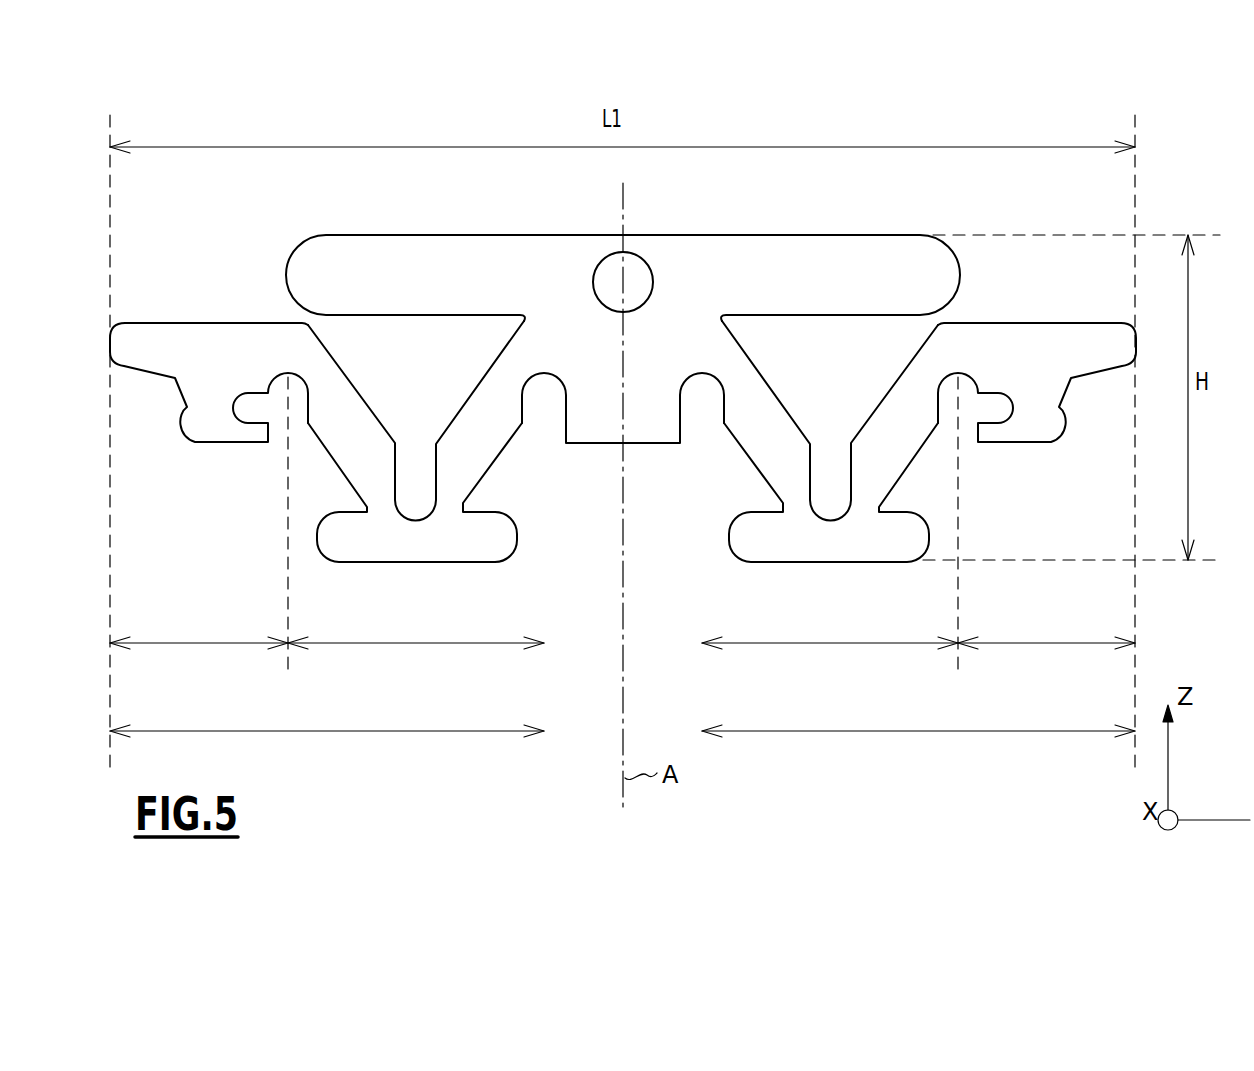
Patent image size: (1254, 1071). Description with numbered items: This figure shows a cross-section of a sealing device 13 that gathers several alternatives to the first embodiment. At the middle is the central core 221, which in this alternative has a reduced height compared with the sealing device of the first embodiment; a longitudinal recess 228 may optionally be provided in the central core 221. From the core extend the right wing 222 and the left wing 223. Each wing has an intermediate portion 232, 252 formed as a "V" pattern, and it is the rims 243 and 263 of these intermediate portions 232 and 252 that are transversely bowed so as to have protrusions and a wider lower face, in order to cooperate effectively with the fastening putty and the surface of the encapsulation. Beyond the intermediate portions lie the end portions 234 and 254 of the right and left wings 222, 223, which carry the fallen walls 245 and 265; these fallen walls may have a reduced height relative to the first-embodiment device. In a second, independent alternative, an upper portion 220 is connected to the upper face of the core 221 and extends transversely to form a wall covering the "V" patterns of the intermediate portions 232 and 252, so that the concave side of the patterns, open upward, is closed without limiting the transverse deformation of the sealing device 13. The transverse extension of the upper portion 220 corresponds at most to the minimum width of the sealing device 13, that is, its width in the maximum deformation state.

The sealing device 13 is at (895, 98).
The upper portion 220 is at (560, 208).
The longitudinal recess 228 is at (653, 273).
The rim 243 is at (412, 545).
The rim 263 is at (835, 540).
The fallen wall 245 is at (196, 429).
The fallen wall 265 is at (1050, 429).
The central core 221 is at (702, 455).
The right wing 222 is at (375, 736).
The left wing 223 is at (968, 736).
The intermediate portion 232 is at (462, 647).
The end portion 234 is at (160, 645).
The intermediate portion 252 is at (788, 647).
The end portion 254 is at (1008, 644).